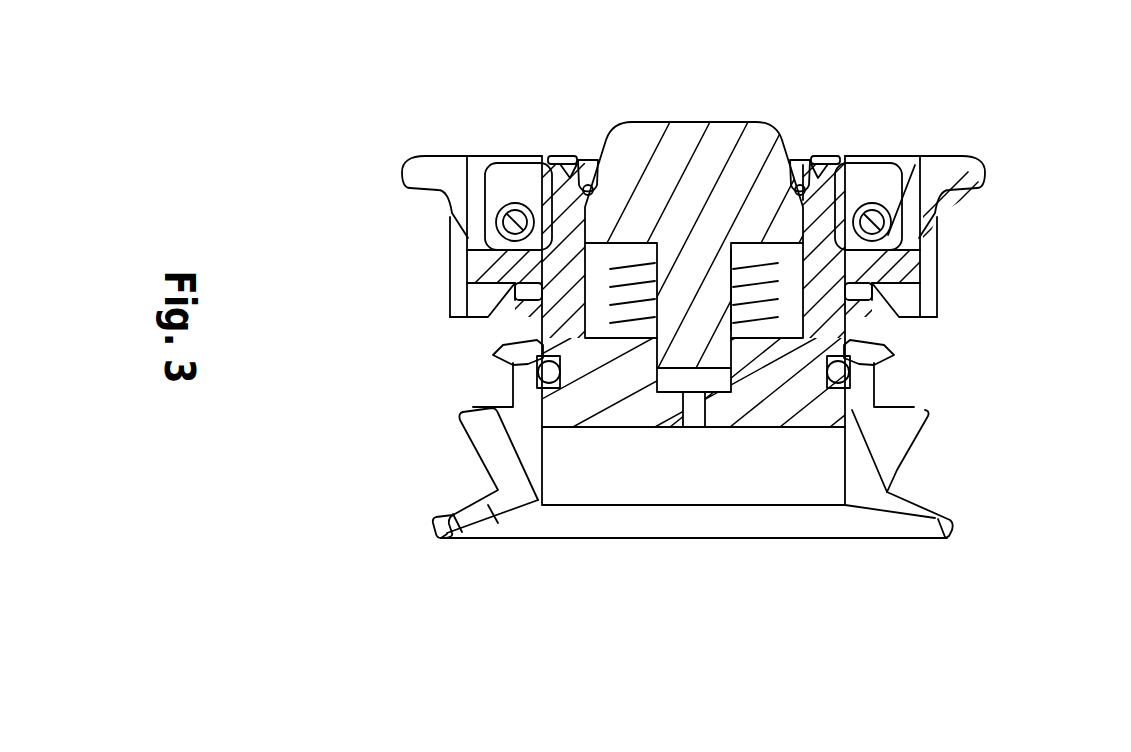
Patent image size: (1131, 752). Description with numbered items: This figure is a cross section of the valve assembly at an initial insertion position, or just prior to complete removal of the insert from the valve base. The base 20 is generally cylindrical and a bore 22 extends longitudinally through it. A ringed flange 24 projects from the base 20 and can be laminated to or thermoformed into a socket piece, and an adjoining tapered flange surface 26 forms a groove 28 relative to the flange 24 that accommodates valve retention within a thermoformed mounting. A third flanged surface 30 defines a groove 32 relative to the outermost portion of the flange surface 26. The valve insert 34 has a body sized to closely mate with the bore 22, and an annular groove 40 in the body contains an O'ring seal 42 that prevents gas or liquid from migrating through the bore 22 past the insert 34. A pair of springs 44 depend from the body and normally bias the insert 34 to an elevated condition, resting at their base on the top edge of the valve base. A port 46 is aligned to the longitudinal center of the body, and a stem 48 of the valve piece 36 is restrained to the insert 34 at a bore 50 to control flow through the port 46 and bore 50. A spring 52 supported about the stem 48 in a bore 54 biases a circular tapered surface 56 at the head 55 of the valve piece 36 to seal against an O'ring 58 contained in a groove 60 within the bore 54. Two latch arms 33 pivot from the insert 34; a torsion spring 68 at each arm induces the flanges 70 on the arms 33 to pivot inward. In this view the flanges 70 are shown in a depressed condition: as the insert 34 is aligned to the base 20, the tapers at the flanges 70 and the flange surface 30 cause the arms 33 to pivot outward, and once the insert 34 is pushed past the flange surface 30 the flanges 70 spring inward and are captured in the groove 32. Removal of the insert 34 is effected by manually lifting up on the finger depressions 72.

The base 20 is at (430, 528).
The bore 22 is at (541, 485).
The ringed flange 24 is at (954, 527).
The tapered flange surface 26 is at (480, 454).
The groove 28 is at (888, 492).
The third flanged surface 30 is at (492, 349).
The groove 32 is at (850, 398).
The latch arms 33 is at (398, 170).
The valve insert 34 is at (578, 152).
The valve piece 36 is at (765, 140).
The annular groove 40 is at (540, 381).
The O'ring seal 42 is at (536, 370).
The springs 44 is at (500, 263).
The port 46 is at (693, 410).
The stem 48 is at (736, 295).
The bore 50 is at (735, 393).
The spring 52 is at (772, 267).
The bore 54 is at (851, 410).
The head 55 is at (704, 117).
The tapered surface 56 is at (792, 165).
The O'ring 58 is at (594, 182).
The groove 60 is at (560, 166).
The torsion spring 68 is at (440, 228).
The flanges 70 is at (476, 298).
The finger depressions 72 is at (965, 190).